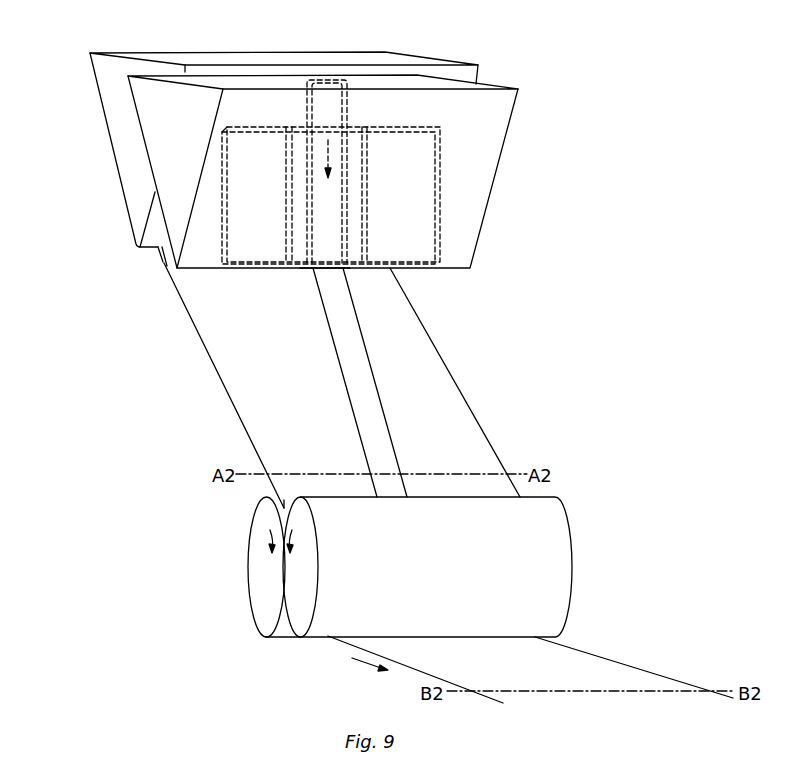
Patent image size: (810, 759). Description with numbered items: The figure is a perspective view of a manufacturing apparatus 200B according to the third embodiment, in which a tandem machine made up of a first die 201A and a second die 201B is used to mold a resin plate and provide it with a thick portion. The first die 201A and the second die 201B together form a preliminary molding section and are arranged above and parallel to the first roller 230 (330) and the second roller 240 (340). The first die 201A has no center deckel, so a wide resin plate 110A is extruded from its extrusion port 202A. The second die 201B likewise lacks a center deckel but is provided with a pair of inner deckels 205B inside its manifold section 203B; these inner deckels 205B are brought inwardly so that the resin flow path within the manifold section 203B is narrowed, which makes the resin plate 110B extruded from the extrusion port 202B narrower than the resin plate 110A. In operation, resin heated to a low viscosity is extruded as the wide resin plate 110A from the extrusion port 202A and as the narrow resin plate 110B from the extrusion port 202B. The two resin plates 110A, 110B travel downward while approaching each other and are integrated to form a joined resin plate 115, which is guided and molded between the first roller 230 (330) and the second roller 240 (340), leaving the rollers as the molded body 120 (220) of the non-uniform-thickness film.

The manufacturing apparatus 200B is at (612, 57).
The first die 201A is at (108, 105).
The second die 201B is at (504, 121).
The extrusion port 202A is at (165, 262).
The extrusion port 202B is at (324, 268).
The manifold section 203B is at (332, 197).
The inner deckels 205B is at (300, 138).
The resin plate 110A is at (217, 345).
The resin plate 110B is at (383, 448).
The joined resin plate 115 is at (273, 480).
The molded body 120 is at (530, 655).
The sheet 220 is at (580, 655).
The second roller 240 is at (234, 583).
The second roller 340 is at (257, 597).
The first roller 230 is at (411, 602).
The first roller 330 is at (323, 632).